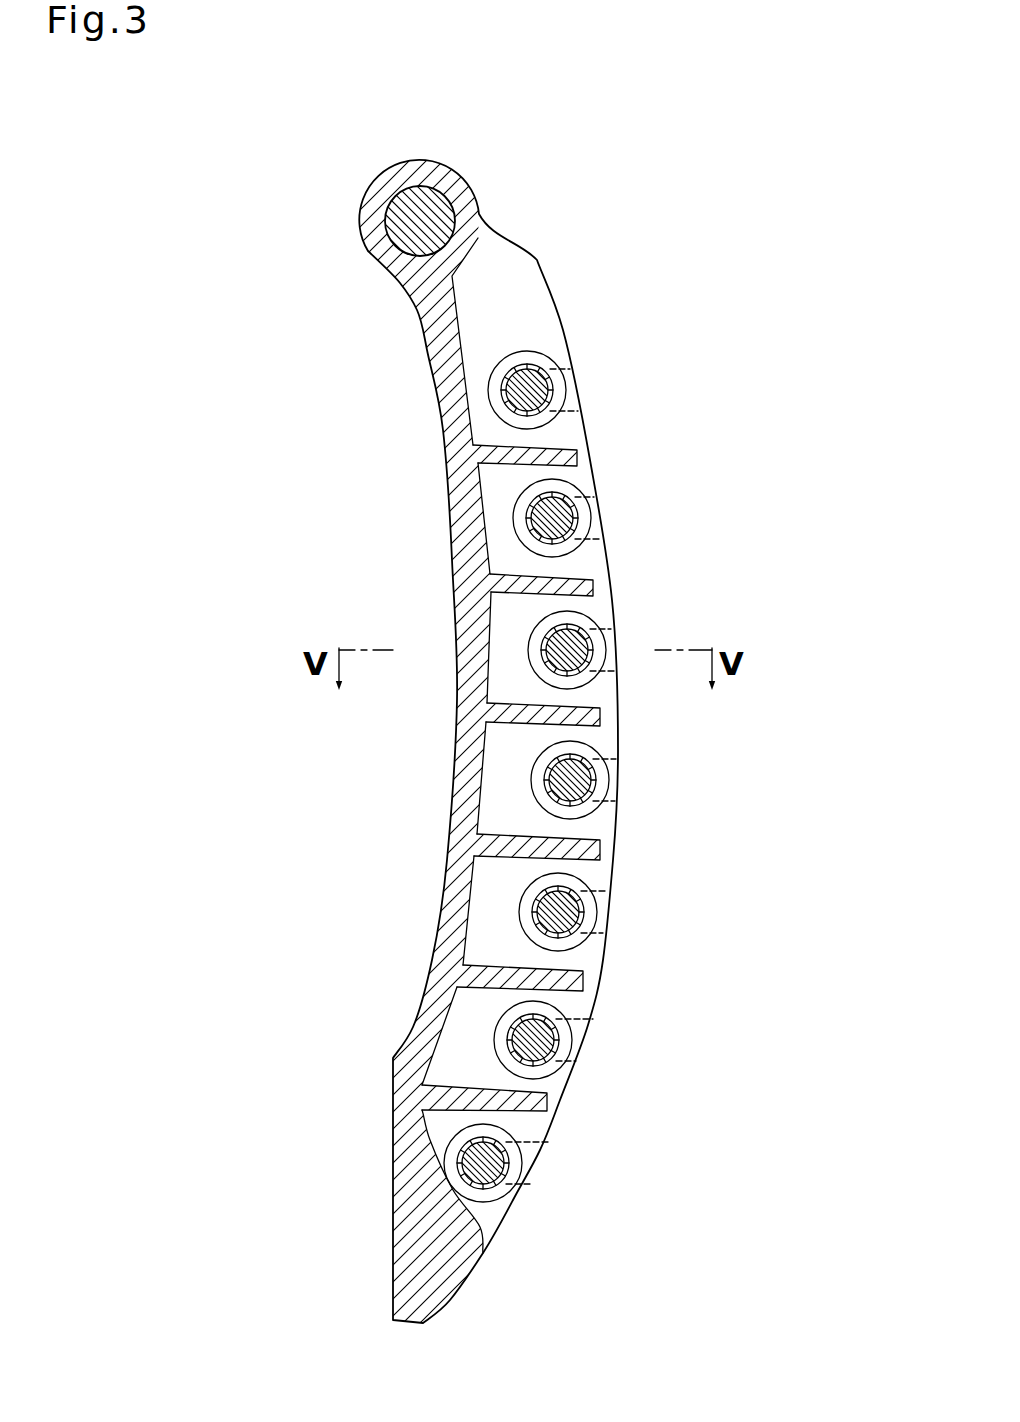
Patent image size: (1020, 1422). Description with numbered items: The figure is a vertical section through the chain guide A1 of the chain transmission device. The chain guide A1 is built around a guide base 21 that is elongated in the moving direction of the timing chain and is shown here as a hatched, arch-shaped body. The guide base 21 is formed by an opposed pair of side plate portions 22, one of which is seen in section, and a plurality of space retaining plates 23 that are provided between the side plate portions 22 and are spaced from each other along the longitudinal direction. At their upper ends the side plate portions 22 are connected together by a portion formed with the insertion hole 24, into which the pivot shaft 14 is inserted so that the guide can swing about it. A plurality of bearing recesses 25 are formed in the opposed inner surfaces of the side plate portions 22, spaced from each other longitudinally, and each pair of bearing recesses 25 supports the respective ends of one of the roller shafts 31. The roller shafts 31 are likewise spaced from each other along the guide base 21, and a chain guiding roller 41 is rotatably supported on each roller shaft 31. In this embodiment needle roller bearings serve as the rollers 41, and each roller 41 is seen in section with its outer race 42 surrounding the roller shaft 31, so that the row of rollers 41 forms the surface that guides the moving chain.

The pivot shaft 14 is at (430, 213).
The guide base 21 is at (438, 404).
The side plate portions 22 is at (510, 297).
The space retaining plates 23 is at (578, 565).
The insertion hole 24 is at (422, 186).
The bearing recesses 25 is at (598, 518).
The roller shafts 31 is at (550, 378).
The chain guiding rollers 41 is at (572, 389).
The outer race 42 is at (535, 357).
The chain guide A1 is at (356, 226).